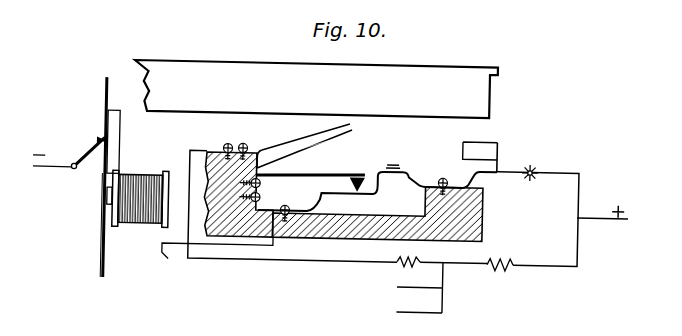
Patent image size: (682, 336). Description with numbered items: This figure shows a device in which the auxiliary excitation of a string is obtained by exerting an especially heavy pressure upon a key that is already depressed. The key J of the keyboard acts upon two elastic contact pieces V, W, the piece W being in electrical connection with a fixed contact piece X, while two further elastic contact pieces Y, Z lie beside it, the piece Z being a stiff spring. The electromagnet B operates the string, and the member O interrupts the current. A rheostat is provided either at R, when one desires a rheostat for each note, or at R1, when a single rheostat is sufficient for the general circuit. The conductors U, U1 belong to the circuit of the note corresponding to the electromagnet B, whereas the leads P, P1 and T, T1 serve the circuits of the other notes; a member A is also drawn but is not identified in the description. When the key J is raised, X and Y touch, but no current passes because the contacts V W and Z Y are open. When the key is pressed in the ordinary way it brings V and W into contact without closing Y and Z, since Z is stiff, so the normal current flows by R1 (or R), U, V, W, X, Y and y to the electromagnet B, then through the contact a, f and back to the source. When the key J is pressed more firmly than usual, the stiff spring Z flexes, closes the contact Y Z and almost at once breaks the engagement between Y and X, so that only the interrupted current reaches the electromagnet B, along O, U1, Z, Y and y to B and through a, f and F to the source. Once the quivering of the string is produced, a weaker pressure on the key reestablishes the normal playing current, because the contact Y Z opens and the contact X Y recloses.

The armature bar A is at (103, 231).
The contact a is at (103, 142).
The contact f is at (99, 146).
The return-circuit member F is at (68, 159).
The electromagnet B is at (137, 179).
The key J is at (316, 89).
The conductor U is at (190, 157).
The circuit element y is at (217, 260).
The elastic contact piece V is at (296, 141).
The elastic contact piece W is at (326, 143).
The fixed contact piece X is at (337, 172).
The elastic contact piece Y is at (342, 191).
The elastic contact piece Z is at (408, 170).
The conductor U1 is at (492, 172).
The lead P1 is at (462, 152).
The lead T1 is at (497, 139).
The current-interrupting member O is at (529, 161).
The rheostat R is at (397, 258).
The rheostat R1 is at (503, 277).
The lead P is at (421, 286).
The lead T is at (434, 311).